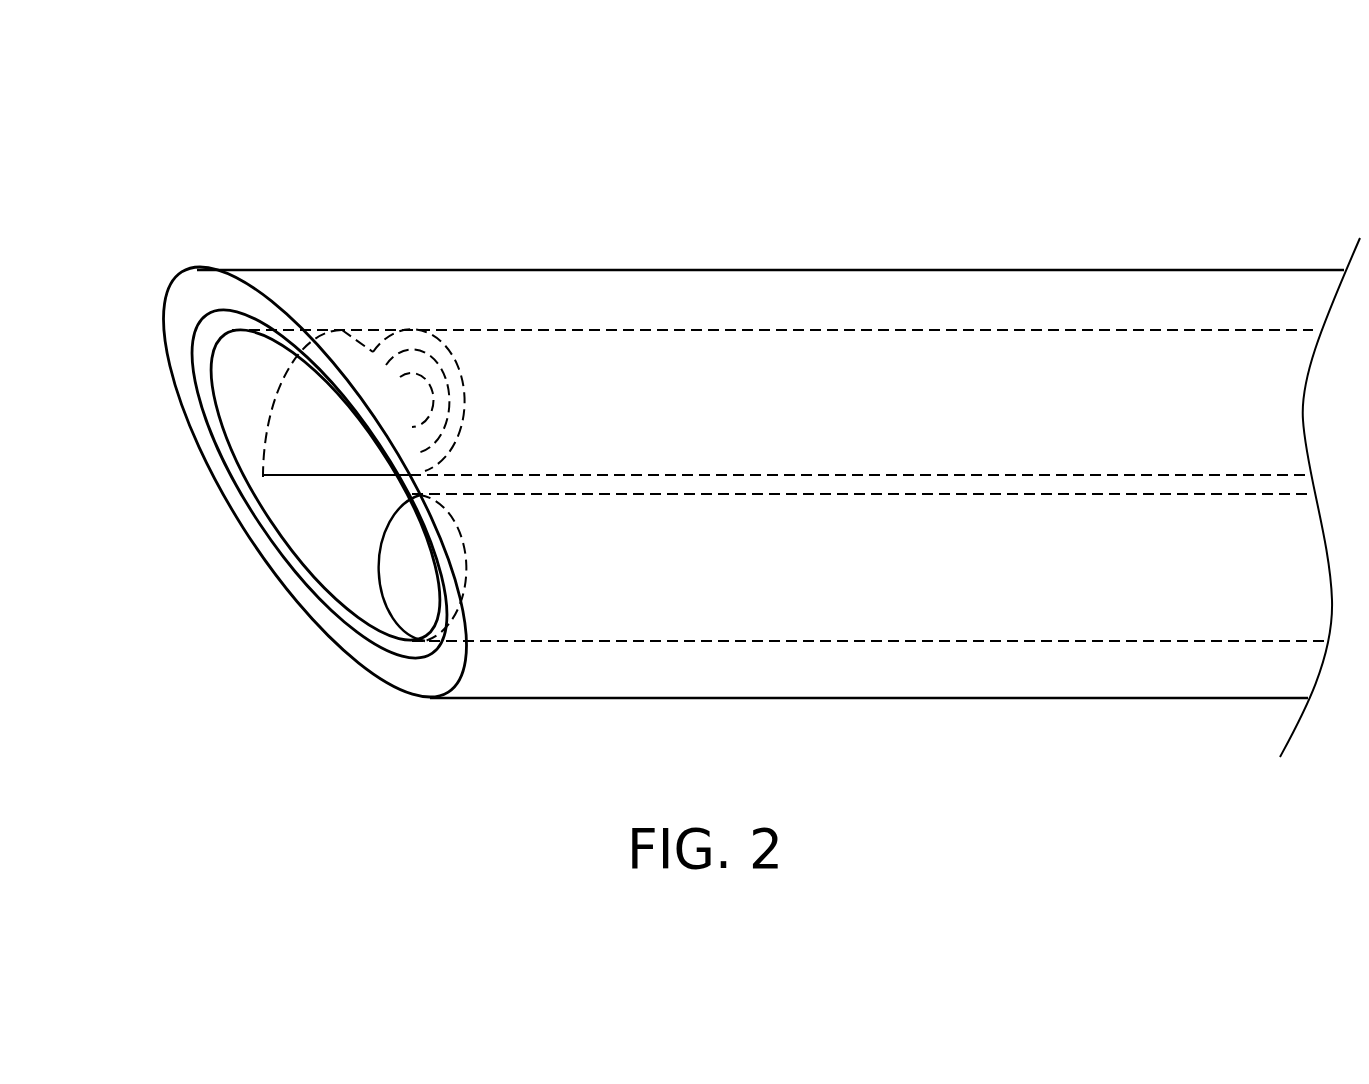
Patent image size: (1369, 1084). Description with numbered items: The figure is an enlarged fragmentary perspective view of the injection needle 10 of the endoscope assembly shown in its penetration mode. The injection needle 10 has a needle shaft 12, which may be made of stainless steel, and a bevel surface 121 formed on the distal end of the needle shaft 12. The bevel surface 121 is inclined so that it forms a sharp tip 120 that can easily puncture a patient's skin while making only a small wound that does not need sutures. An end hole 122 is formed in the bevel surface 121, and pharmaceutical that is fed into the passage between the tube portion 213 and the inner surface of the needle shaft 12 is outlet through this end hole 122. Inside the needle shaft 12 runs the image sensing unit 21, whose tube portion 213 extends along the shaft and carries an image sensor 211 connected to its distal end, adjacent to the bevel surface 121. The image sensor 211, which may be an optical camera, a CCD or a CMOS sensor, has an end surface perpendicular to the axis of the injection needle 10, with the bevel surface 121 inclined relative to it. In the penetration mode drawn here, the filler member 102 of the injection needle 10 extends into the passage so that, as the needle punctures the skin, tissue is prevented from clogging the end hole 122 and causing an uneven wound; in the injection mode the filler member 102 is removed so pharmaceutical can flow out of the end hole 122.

The injection needle 10 is at (703, 442).
The needle shaft 12 is at (815, 270).
The sharp tip 120 is at (192, 297).
The bevel surface 121 is at (170, 373).
The end hole 122 is at (282, 510).
The image sensing unit 21 is at (772, 319).
The image sensor 211 is at (412, 400).
The tube portion 213 is at (558, 362).
The filler member 102 is at (413, 568).